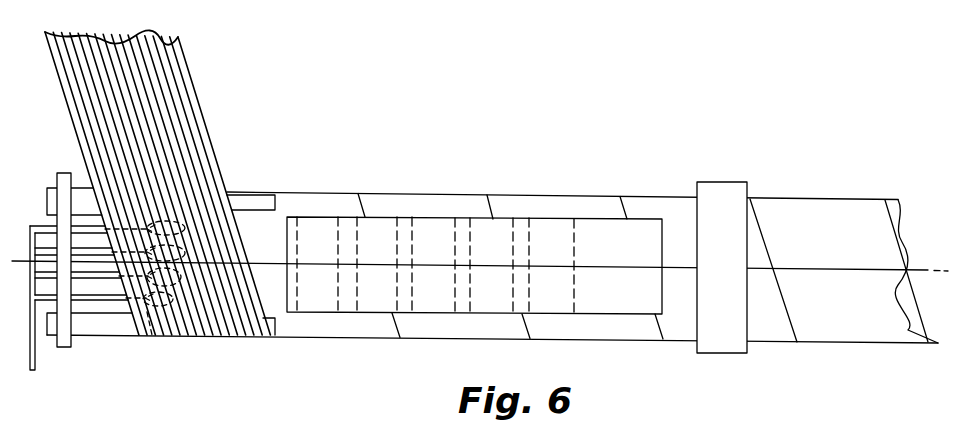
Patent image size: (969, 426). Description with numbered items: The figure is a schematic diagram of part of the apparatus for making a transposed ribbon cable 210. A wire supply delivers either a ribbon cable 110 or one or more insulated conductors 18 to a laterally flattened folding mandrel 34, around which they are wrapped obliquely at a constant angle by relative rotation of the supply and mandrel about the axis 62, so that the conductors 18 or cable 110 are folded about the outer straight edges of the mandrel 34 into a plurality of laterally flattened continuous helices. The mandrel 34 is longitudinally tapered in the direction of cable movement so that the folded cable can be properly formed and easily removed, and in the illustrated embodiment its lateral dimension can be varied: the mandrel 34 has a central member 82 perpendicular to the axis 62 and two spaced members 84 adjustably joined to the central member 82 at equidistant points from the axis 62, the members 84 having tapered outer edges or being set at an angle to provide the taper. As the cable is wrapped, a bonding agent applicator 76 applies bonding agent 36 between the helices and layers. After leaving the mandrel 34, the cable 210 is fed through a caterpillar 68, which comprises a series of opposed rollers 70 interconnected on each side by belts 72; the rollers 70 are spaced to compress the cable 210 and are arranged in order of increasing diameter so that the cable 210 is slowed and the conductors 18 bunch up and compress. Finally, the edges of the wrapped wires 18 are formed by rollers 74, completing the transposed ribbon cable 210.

The conductors 18 is at (173, 90).
The ribbon cable 110 is at (208, 133).
The central member 82 is at (66, 173).
The axis 62 is at (15, 261).
The bonding agent applicator 76 is at (37, 362).
The mandrel 34 is at (107, 327).
The bonding agent 36 is at (153, 337).
The spaced members 84 is at (280, 337).
The belts 72 is at (383, 217).
The caterpillar 68 is at (551, 219).
The opposed rollers 70 is at (432, 297).
The rollers 74 is at (723, 182).
The transposed ribbon cable 210 is at (827, 342).